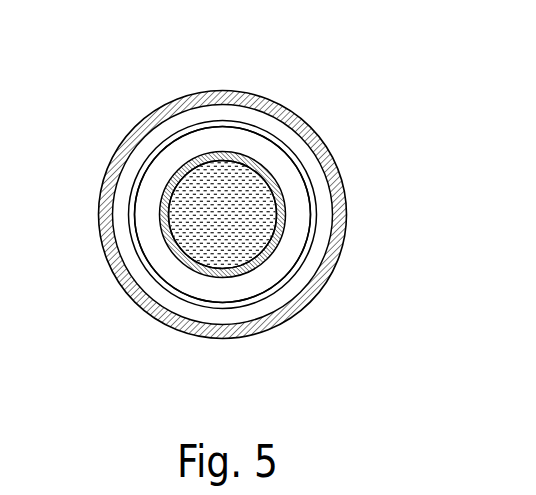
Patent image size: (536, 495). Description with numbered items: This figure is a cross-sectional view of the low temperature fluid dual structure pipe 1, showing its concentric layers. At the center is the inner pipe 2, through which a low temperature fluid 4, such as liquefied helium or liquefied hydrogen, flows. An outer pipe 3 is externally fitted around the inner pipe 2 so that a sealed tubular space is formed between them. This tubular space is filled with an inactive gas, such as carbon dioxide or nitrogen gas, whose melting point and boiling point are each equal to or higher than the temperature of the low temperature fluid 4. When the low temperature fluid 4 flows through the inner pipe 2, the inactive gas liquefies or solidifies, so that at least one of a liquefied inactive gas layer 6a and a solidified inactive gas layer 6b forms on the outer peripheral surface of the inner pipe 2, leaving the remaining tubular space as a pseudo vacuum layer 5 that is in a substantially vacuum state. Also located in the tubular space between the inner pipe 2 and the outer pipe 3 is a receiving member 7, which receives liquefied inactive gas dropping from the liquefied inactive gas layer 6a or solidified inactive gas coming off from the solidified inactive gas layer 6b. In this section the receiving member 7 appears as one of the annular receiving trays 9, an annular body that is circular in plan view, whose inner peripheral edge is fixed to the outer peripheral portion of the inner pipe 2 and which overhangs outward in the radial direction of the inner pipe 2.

The low temperature fluid dual structure pipe 1 is at (339, 78).
The inner pipe 2 is at (245, 153).
The outer pipe 3 is at (338, 168).
The low temperature fluid 4 is at (172, 212).
The pseudo vacuum layer 5 is at (155, 132).
The liquefied inactive gas layer 6a is at (203, 155).
The solidified inactive gas layer 6b is at (223, 215).
The receiving member 7 is at (223, 215).
The annular receiving tray 9 is at (208, 295).